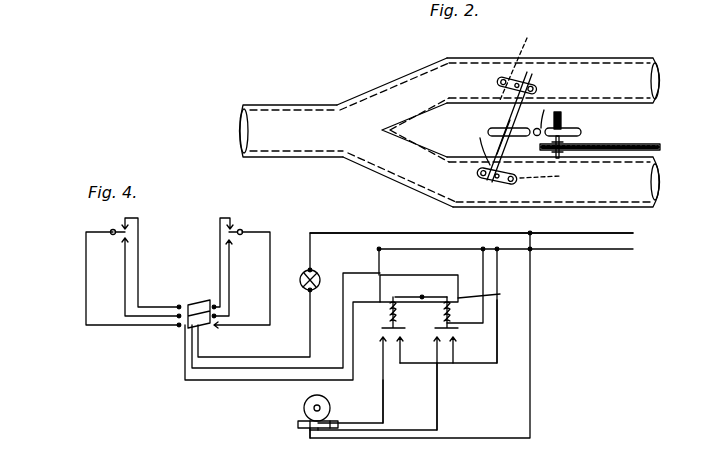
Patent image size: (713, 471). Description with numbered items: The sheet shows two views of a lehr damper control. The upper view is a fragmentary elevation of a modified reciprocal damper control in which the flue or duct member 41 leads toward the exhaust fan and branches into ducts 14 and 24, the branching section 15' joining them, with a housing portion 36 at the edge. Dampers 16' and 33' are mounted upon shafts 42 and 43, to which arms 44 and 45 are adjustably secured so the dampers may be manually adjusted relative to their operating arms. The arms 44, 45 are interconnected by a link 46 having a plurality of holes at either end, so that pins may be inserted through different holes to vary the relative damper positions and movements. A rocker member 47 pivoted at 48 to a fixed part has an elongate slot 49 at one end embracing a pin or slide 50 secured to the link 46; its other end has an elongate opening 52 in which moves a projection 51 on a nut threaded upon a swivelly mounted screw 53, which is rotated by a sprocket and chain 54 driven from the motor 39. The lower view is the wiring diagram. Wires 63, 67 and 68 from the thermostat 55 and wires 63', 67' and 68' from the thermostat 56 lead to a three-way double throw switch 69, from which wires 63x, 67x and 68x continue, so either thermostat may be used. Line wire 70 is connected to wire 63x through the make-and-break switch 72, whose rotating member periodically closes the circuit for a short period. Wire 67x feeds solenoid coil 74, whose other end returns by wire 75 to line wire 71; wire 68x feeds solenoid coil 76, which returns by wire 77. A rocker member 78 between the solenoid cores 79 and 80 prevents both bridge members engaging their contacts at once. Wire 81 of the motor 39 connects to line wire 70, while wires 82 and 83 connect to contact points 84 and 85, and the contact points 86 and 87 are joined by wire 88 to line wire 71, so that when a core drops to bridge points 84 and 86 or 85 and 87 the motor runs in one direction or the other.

In FIG. 2, the duct 14 is at (648, 208).
In FIG. 2, the branched pipe section 15' is at (396, 125).
In FIG. 2, the damper 16' is at (552, 178).
In FIG. 2, the duct 24 is at (655, 80).
In FIG. 2, the damper 33' is at (521, 59).
In FIG. 2, the housing 36 is at (693, 7).
In FIG. 4, the motor 39 is at (330, 404).
In FIG. 2, the flue or duct member 41 is at (268, 102).
In FIG. 2, the shaft 42 is at (505, 185).
In FIG. 2, the shaft 43 is at (505, 80).
In FIG. 2, the arm 44 is at (505, 128).
In FIG. 2, the arm 45 is at (530, 75).
In FIG. 2, the link 46 is at (487, 170).
In FIG. 2, the rocker member 47 is at (558, 112).
In FIG. 2, the pivot 48 is at (541, 126).
In FIG. 2, the elongate slot 49 is at (488, 132).
In FIG. 2, the pin or slide 50 is at (500, 128).
In FIG. 2, the projection 51 is at (578, 128).
In FIG. 2, the elongate opening 52 is at (600, 140).
In FIG. 2, the swivelly mounted screw 53 is at (565, 130).
In FIG. 2, the sprocket and chain 54 is at (582, 152).
In FIG. 4, the thermostat 55 is at (110, 232).
In FIG. 4, the thermostat 56 is at (243, 231).
In FIG. 4, the wire 63 is at (111, 279).
In FIG. 4, the wire 63' is at (264, 262).
In FIG. 4, the wire 63x is at (250, 357).
In FIG. 4, the wire 67 is at (151, 263).
In FIG. 4, the wire 67' is at (209, 253).
In FIG. 4, the wire 67x is at (270, 380).
In FIG. 4, the wire 68 is at (151, 278).
In FIG. 4, the wire 68' is at (236, 279).
In FIG. 4, the wire 68x is at (232, 368).
In FIG. 4, the three-way double throw switch 69 is at (190, 322).
In FIG. 4, the line wire 70 is at (575, 233).
In FIG. 4, the line wire 71 is at (618, 249).
In FIG. 4, the make-and-break switch 72 is at (302, 288).
In FIG. 4, the solenoid coil 74 is at (396, 312).
In FIG. 4, the wire 75 is at (382, 263).
In FIG. 4, the solenoid coil 76 is at (450, 314).
In FIG. 4, the wire 77 is at (483, 263).
In FIG. 4, the rocker member 78 is at (408, 297).
In FIG. 4, the solenoid core 79 is at (419, 288).
In FIG. 4, the solenoid core 80 is at (490, 292).
In FIG. 4, the wire 81 is at (530, 420).
In FIG. 4, the wire 82 is at (384, 408).
In FIG. 4, the wire 83 is at (438, 408).
In FIG. 4, the contact point 84 is at (383, 340).
In FIG. 4, the contact point 85 is at (420, 383).
In FIG. 4, the contact point 86 is at (426, 342).
In FIG. 4, the contact point 87 is at (455, 340).
In FIG. 4, the wire 88 is at (497, 349).